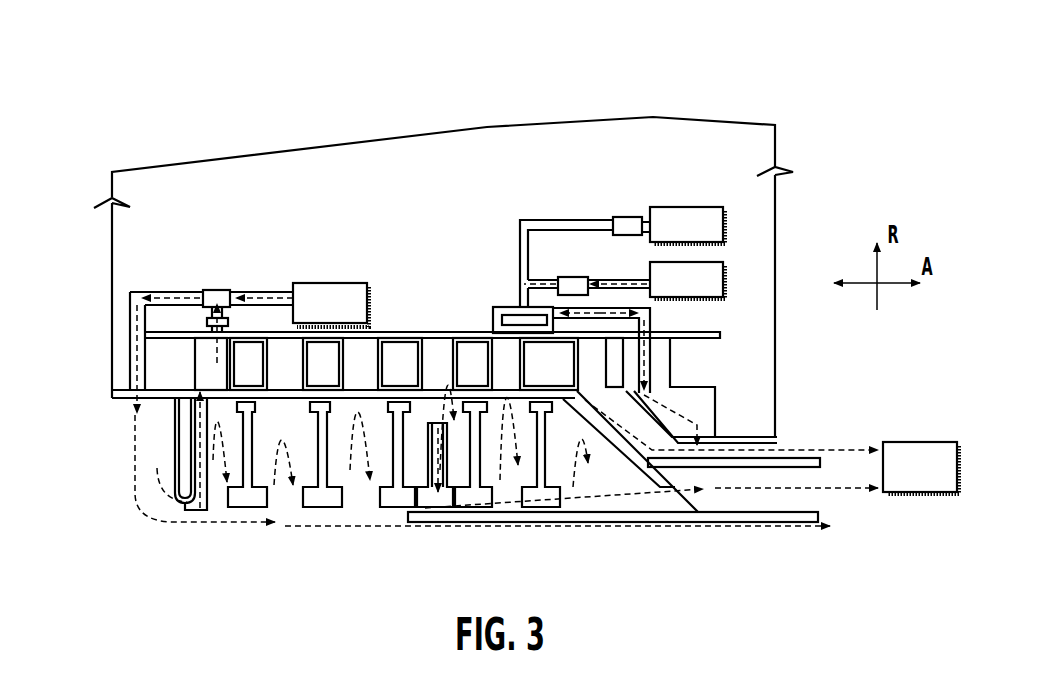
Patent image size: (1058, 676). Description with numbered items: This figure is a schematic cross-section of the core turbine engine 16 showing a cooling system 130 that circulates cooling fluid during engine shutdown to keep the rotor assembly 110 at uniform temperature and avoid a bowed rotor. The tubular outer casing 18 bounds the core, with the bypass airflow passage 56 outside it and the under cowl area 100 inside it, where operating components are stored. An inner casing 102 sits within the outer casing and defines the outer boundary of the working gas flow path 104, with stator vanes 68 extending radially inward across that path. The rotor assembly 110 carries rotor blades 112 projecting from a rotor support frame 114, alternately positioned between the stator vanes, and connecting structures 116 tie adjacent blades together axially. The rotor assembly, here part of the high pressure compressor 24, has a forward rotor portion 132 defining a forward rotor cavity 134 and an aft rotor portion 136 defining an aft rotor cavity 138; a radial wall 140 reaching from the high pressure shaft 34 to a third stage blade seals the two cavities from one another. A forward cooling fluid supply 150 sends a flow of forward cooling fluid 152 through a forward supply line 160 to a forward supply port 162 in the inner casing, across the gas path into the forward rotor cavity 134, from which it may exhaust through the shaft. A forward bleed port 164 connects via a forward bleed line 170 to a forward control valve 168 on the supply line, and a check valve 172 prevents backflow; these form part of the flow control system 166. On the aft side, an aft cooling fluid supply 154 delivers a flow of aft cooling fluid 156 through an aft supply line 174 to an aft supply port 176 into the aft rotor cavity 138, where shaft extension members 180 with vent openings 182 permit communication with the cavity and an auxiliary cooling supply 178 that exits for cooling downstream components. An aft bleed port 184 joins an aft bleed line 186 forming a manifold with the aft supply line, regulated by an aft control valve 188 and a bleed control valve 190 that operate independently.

The core turbine engine 16 is at (458, 228).
The outer casing 18 is at (651, 118).
The high pressure compressor 24 is at (409, 288).
The high pressure shaft 34 is at (587, 519).
The bypass airflow passage 56 is at (528, 93).
The stator vanes 68 is at (436, 352).
The under cowl area 100 is at (531, 254).
The inner casing 102 is at (399, 352).
The working gas flow path 104 is at (456, 343).
The rotor assembly 110 is at (386, 516).
The rotor blades 112 is at (407, 350).
The rotor support frame 114 is at (316, 510).
The connecting structures 116 is at (367, 397).
The cooling system 130 is at (682, 185).
The forward rotor portion 132 is at (186, 547).
The forward rotor cavity 134 is at (400, 486).
The aft rotor portion 136 is at (781, 532).
The aft rotor cavity 138 is at (632, 487).
The radial wall 140 is at (433, 511).
The forward cooling fluid supply 150 is at (313, 316).
The flow of forward cooling fluid 152 is at (133, 426).
The aft cooling fluid supply 154 is at (669, 294).
The flow of aft cooling fluid 156 is at (505, 508).
The forward supply line 160 is at (254, 291).
The forward supply port 162 is at (121, 407).
The forward bleed port 164 is at (231, 322).
The flow control system 166 is at (409, 221).
The forward control valve 168 is at (222, 290).
The forward bleed line 170 is at (207, 315).
The check valve 172 is at (206, 325).
The aft supply line 174 is at (592, 288).
The aft supply port 176 is at (655, 338).
The auxiliary cooling supply 178 is at (669, 239).
The shaft extension members 180 is at (604, 442).
The vent openings 182 is at (720, 472).
The aft bleed port 184 is at (521, 328).
The aft bleed line 186 is at (548, 218).
The aft control valve 188 is at (587, 265).
The bleed control valve 190 is at (614, 216).